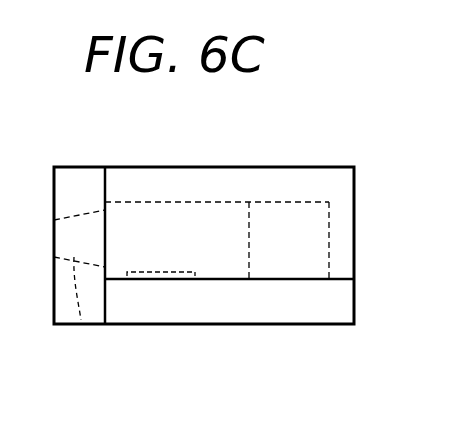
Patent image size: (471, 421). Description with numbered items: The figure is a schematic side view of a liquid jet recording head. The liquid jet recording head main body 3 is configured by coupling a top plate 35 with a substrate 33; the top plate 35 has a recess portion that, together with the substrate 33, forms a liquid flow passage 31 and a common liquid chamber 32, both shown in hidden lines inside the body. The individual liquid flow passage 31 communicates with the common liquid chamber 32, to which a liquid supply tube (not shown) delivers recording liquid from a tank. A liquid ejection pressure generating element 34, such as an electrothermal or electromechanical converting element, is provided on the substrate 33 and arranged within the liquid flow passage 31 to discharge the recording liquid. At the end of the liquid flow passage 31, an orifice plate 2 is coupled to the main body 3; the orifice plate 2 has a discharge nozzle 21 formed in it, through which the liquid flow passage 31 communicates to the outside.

The liquid jet recording head main body 3 is at (313, 167).
The orifice plate 2 is at (81, 180).
The discharge nozzle 21 is at (81, 320).
The top plate 35 is at (150, 180).
The liquid flow passage 31 is at (199, 210).
The common liquid chamber 32 is at (274, 210).
The liquid ejection pressure generating element 34 is at (162, 275).
The substrate 33 is at (289, 318).